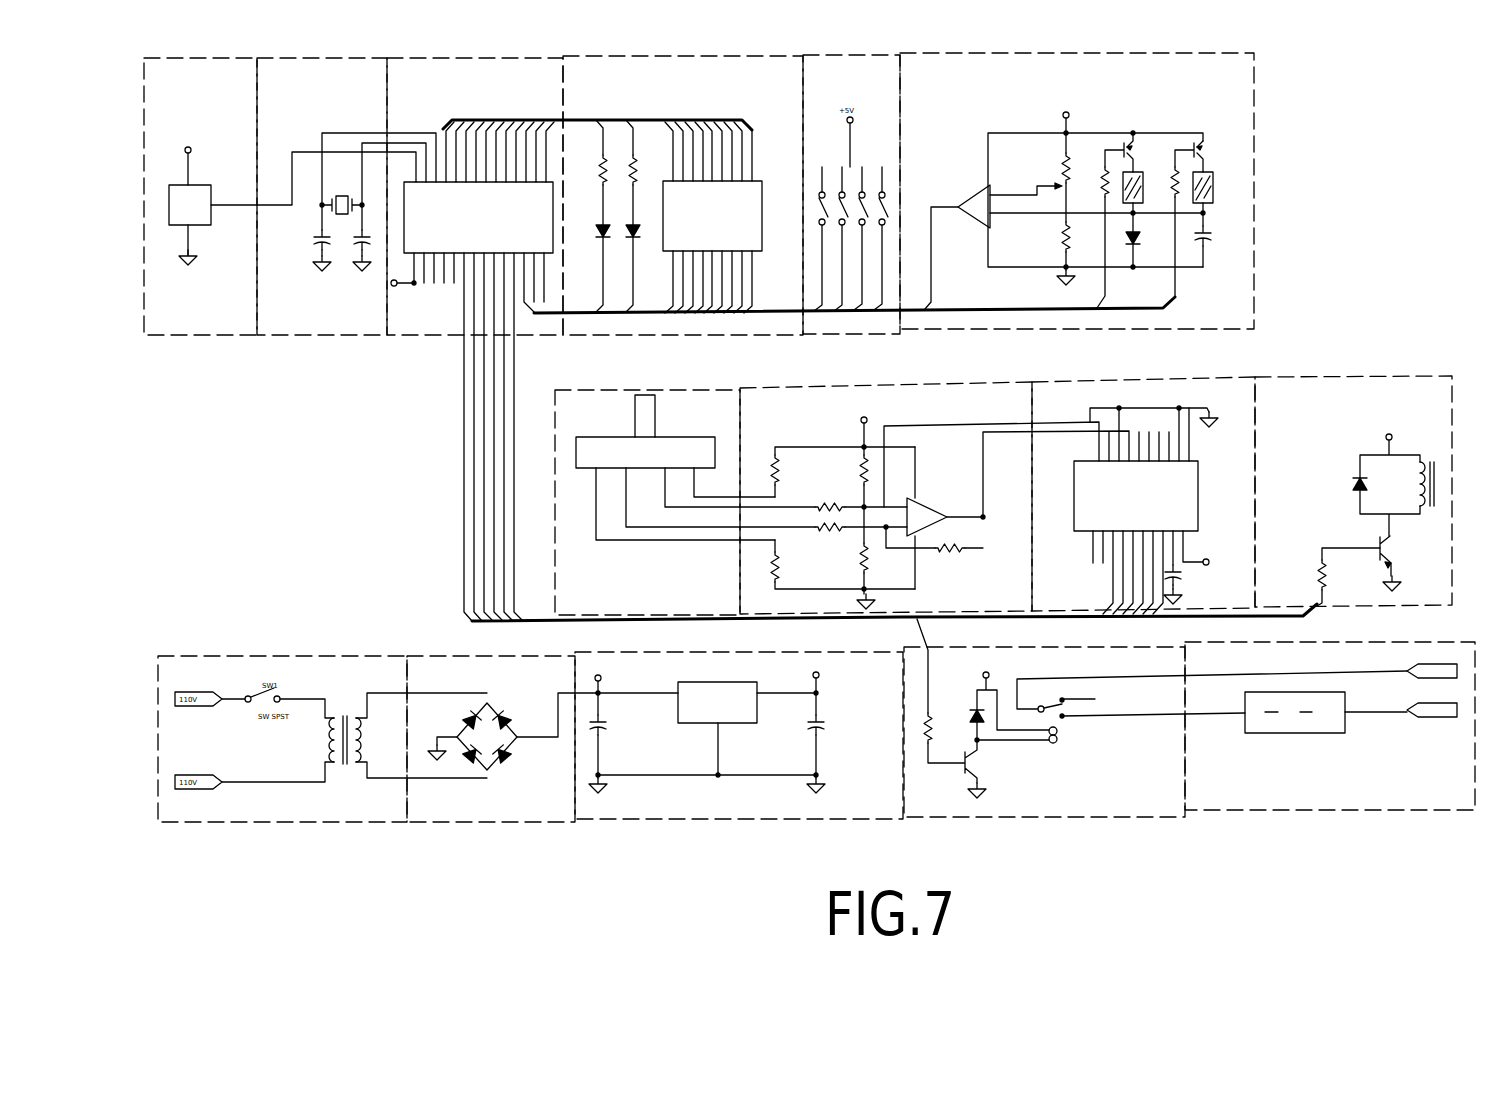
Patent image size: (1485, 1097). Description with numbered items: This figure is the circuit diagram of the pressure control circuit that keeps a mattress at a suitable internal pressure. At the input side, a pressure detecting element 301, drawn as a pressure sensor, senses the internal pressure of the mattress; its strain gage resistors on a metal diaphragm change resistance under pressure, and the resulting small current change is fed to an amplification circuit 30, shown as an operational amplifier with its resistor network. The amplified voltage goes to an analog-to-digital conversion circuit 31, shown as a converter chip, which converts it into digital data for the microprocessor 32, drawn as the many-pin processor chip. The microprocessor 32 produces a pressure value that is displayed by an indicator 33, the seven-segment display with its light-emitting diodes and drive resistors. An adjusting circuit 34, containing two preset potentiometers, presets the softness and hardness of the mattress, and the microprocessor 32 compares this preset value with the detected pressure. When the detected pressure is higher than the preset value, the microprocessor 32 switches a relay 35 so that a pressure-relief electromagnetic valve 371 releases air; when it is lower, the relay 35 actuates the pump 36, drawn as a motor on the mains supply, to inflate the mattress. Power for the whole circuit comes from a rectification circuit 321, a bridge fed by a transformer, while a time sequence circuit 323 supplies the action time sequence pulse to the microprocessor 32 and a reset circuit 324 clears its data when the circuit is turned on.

The time sequence circuit 323 is at (218, 326).
The reset circuit 324 is at (325, 326).
The microprocessor 32 is at (432, 330).
The indicator 33 is at (784, 323).
The adjusting circuit 34 is at (1233, 285).
The amplification circuit 30 is at (958, 402).
The pressure detecting element 301 is at (700, 410).
The analog-to-digital conversion circuit 31 is at (1233, 397).
The pressure-relief electromagnetic valve 371 is at (1327, 403).
The rectification circuit 321 is at (497, 810).
The relay 35 is at (1085, 800).
The pump 36 is at (1248, 795).